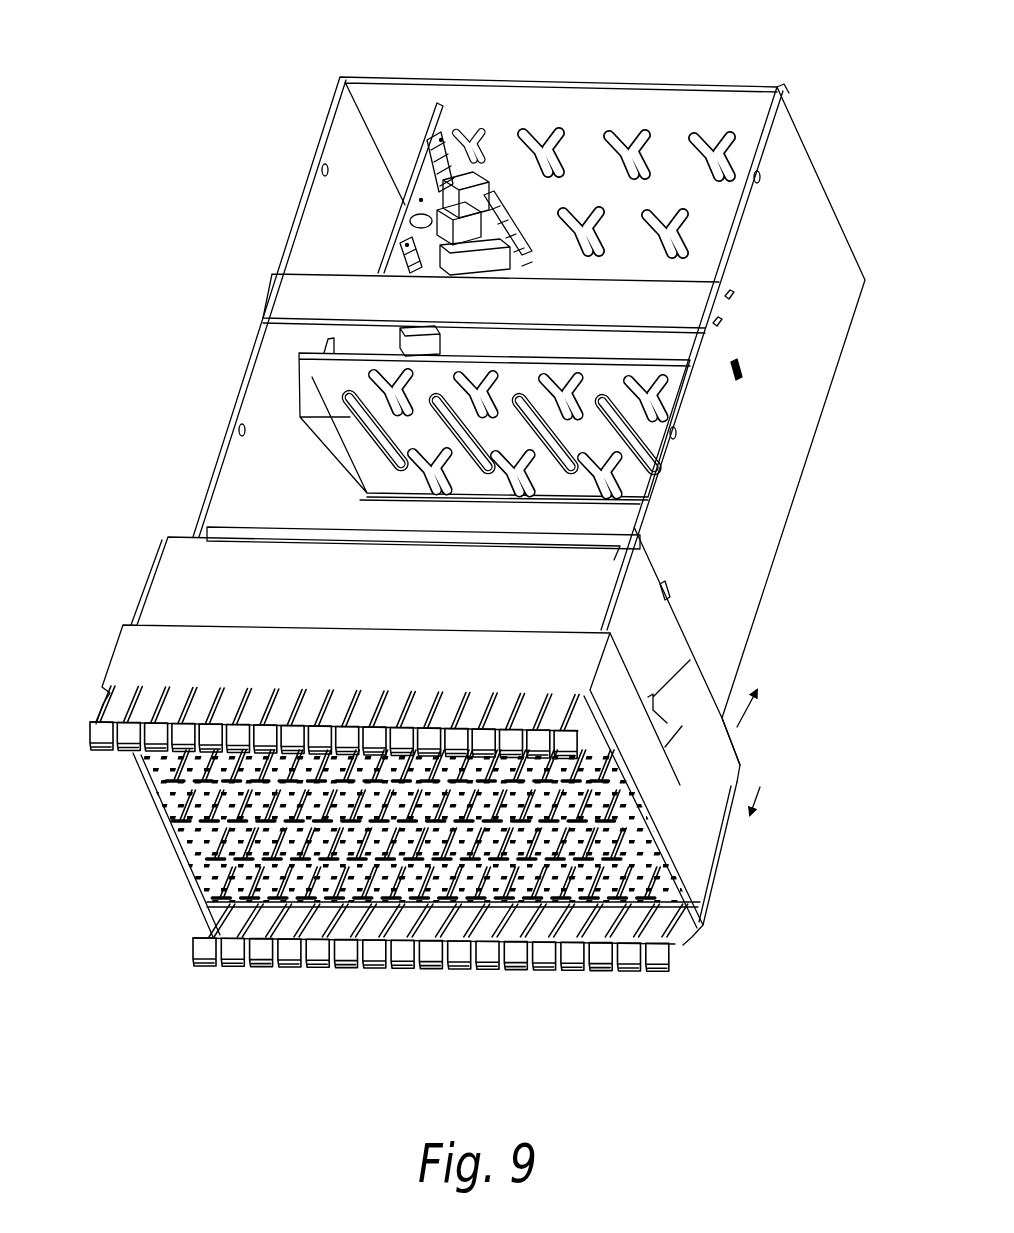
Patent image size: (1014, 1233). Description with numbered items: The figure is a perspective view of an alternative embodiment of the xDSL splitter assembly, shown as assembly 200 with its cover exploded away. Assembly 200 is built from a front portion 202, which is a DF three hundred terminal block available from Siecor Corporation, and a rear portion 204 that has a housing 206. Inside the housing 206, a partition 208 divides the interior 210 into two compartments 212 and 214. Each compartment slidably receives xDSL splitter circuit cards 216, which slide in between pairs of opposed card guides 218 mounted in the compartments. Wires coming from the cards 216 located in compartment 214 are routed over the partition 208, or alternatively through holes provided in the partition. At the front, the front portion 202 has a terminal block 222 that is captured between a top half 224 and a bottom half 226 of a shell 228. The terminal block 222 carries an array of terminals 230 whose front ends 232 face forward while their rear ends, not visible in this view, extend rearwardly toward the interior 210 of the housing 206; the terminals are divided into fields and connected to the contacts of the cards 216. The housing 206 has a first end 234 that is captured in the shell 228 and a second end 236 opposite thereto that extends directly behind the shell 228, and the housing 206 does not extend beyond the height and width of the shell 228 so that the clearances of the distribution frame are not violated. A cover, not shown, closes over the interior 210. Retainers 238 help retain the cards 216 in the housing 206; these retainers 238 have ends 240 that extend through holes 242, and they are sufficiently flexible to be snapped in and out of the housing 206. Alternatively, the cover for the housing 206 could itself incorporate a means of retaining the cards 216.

The assembly 200 is at (132, 828).
The front portion 202 is at (774, 813).
The rear portion 204 is at (767, 727).
The housing 206 is at (760, 582).
The partition 208 is at (663, 367).
The interior 210 is at (675, 107).
The compartment 212 is at (616, 516).
The compartment 214 is at (680, 340).
The xDSL splitter circuit cards 216 is at (435, 100).
The card guides 218 is at (562, 157).
The terminal block 222 is at (658, 970).
The top half 224 is at (663, 630).
The bottom half 226 is at (712, 862).
The shell 228 is at (680, 933).
The terminals 230 is at (443, 910).
The front ends 232 is at (350, 882).
The first end 234 is at (735, 660).
The second end 236 is at (808, 180).
The retainers 238 is at (283, 300).
The ends 240 is at (728, 292).
The holes 242 is at (718, 320).